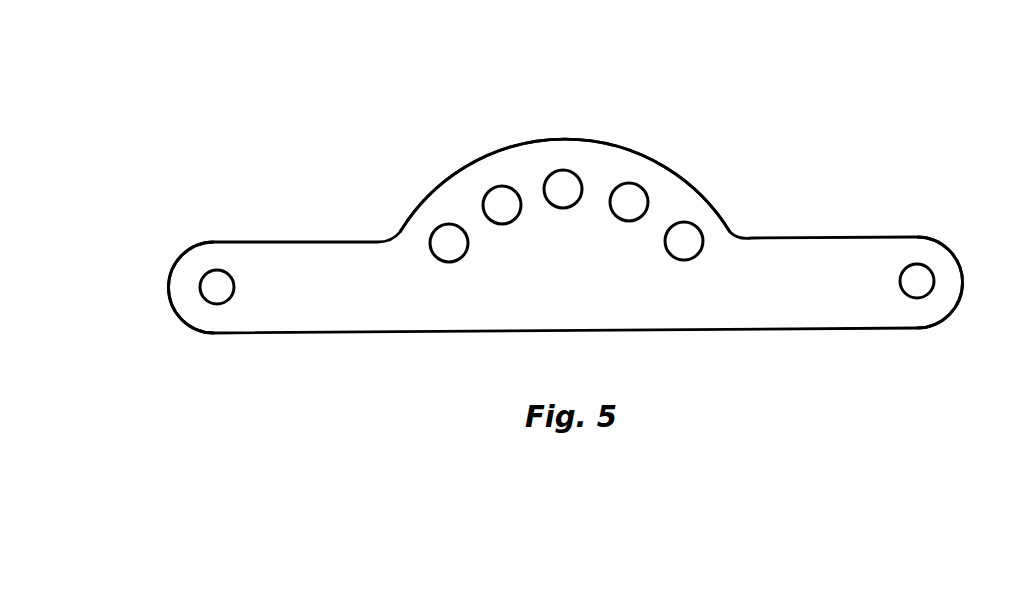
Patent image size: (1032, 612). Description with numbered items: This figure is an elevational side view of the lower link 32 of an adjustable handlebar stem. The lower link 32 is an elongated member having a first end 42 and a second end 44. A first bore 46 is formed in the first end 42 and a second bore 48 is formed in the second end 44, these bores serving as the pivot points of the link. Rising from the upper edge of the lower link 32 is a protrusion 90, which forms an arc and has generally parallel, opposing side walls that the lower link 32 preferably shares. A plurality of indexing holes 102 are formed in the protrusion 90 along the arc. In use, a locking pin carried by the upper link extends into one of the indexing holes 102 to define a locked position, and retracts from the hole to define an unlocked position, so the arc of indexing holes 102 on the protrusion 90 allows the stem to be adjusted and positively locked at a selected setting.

The lower link 32 is at (872, 257).
The protrusion 90 is at (660, 188).
The indexing holes 102 is at (563, 169).
The first bore 46 is at (212, 270).
The second bore 48 is at (933, 270).
The first end 42 is at (232, 333).
The second end 44 is at (954, 311).